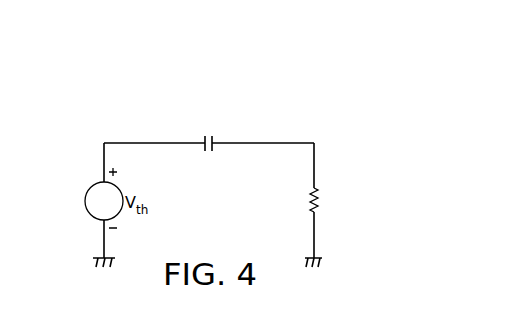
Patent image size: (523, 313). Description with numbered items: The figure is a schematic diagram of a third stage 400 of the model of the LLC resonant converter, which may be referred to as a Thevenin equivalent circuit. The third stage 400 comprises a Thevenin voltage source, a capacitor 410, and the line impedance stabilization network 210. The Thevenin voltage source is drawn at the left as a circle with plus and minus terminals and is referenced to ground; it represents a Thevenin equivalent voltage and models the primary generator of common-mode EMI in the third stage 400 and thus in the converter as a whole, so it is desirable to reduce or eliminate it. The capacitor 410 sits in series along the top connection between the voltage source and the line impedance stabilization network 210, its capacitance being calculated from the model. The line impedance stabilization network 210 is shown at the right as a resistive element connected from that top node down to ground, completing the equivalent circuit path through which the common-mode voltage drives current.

The third stage 400 is at (278, 90).
The capacitor Ctot 410 is at (208, 157).
The LISN 210 is at (310, 196).